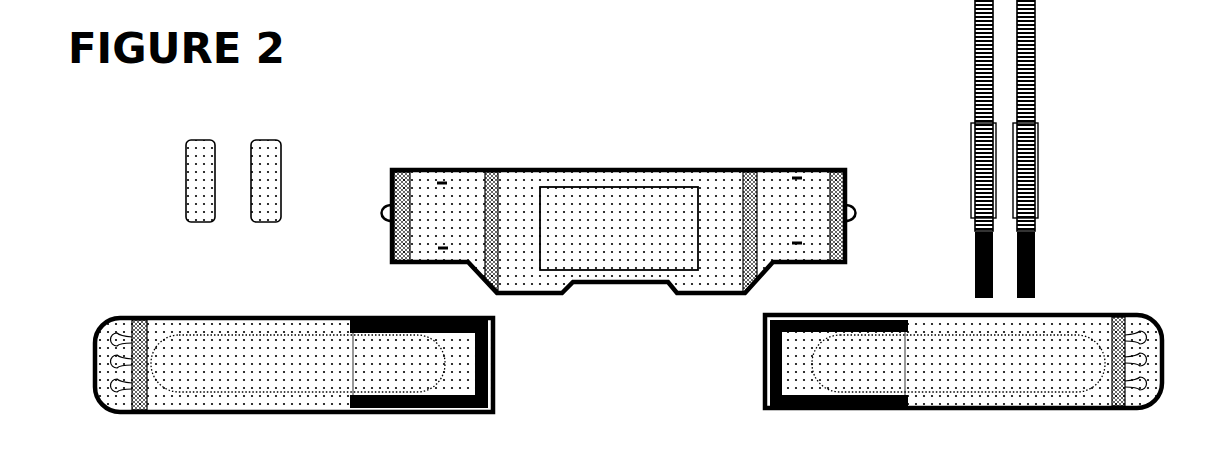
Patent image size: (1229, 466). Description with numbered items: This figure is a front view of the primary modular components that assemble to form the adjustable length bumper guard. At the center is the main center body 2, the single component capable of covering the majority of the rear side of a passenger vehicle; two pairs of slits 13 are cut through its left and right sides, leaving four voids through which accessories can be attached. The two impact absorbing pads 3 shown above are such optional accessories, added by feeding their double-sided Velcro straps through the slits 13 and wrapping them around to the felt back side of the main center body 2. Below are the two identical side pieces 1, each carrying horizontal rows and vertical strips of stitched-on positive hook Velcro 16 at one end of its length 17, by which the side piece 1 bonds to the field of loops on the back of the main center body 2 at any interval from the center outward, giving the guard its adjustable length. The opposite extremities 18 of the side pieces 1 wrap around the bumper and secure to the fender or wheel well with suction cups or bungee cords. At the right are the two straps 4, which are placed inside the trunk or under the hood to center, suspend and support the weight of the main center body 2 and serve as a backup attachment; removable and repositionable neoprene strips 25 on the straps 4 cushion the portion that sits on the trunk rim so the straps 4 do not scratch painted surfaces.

The side pieces 1 is at (334, 427).
The main center body 2 is at (625, 152).
The impact absorbing pads 3 is at (267, 128).
The straps 4 is at (997, 34).
The slits 13 is at (441, 181).
The hooked Velcro strips 16 is at (495, 358).
The end of side piece 17 is at (496, 397).
The extremities of side pieces 18 is at (97, 382).
The neoprene strips 25 is at (968, 188).